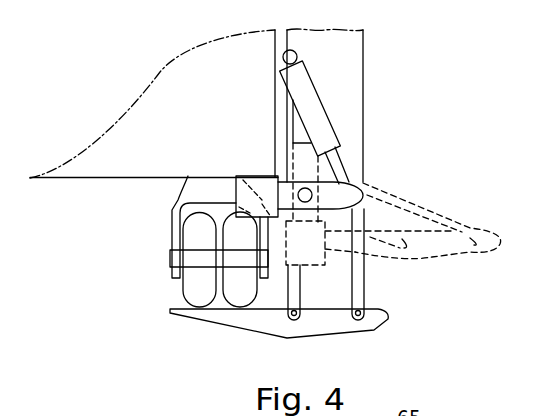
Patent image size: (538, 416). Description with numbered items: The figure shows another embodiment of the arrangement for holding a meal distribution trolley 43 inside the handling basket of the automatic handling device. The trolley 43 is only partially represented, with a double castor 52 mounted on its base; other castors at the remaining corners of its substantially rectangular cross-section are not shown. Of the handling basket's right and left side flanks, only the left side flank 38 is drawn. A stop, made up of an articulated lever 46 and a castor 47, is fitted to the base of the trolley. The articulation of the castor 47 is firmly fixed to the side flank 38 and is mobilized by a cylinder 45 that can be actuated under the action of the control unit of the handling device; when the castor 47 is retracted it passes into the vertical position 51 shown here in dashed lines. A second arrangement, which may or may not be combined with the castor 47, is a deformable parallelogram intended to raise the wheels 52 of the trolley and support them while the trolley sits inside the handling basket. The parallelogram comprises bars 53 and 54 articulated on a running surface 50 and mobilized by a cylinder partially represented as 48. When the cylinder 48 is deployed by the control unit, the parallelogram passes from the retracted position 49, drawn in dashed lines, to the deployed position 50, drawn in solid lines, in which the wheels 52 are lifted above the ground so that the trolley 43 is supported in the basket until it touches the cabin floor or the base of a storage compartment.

The left side flank 38 is at (355, 75).
The meal distribution trolley 43 is at (152, 109).
The cylinder 45 is at (312, 115).
The articulated lever 46 is at (357, 183).
The castor 47 is at (248, 188).
The cylinder 48 is at (298, 130).
The retracted position 49 is at (435, 248).
The deployed position 50 is at (318, 327).
The vertical position 51 is at (317, 265).
The double castor 52 is at (195, 290).
The bar 53 is at (362, 293).
The bar 54 is at (287, 300).